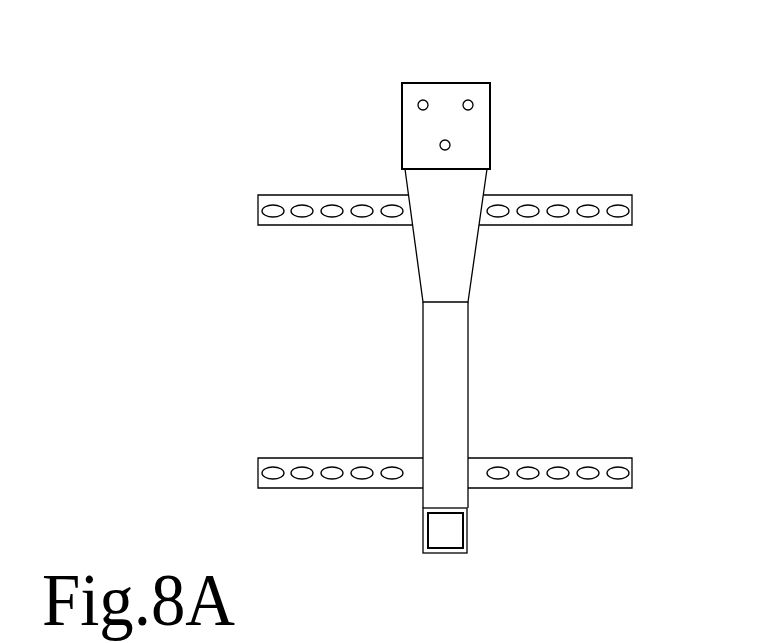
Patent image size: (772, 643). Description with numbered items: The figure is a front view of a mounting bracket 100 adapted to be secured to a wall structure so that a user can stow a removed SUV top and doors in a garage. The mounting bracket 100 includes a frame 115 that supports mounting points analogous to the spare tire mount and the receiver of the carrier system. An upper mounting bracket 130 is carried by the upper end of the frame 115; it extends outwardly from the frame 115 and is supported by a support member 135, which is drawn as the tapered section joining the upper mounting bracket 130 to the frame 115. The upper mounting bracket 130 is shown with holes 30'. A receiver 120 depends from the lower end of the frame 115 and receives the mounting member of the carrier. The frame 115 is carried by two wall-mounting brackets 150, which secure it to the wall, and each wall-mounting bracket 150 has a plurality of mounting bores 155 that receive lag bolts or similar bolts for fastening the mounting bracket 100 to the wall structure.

The mounting bracket 100 is at (582, 62).
The upper mounting bracket 130 is at (436, 80).
The fastener holes 30' is at (447, 96).
The support member 135 is at (450, 253).
The frame 115 is at (468, 367).
The receiver 120 is at (467, 527).
The wall-mounting bracket 150 is at (285, 225).
The mounting bores 155 is at (272, 205).